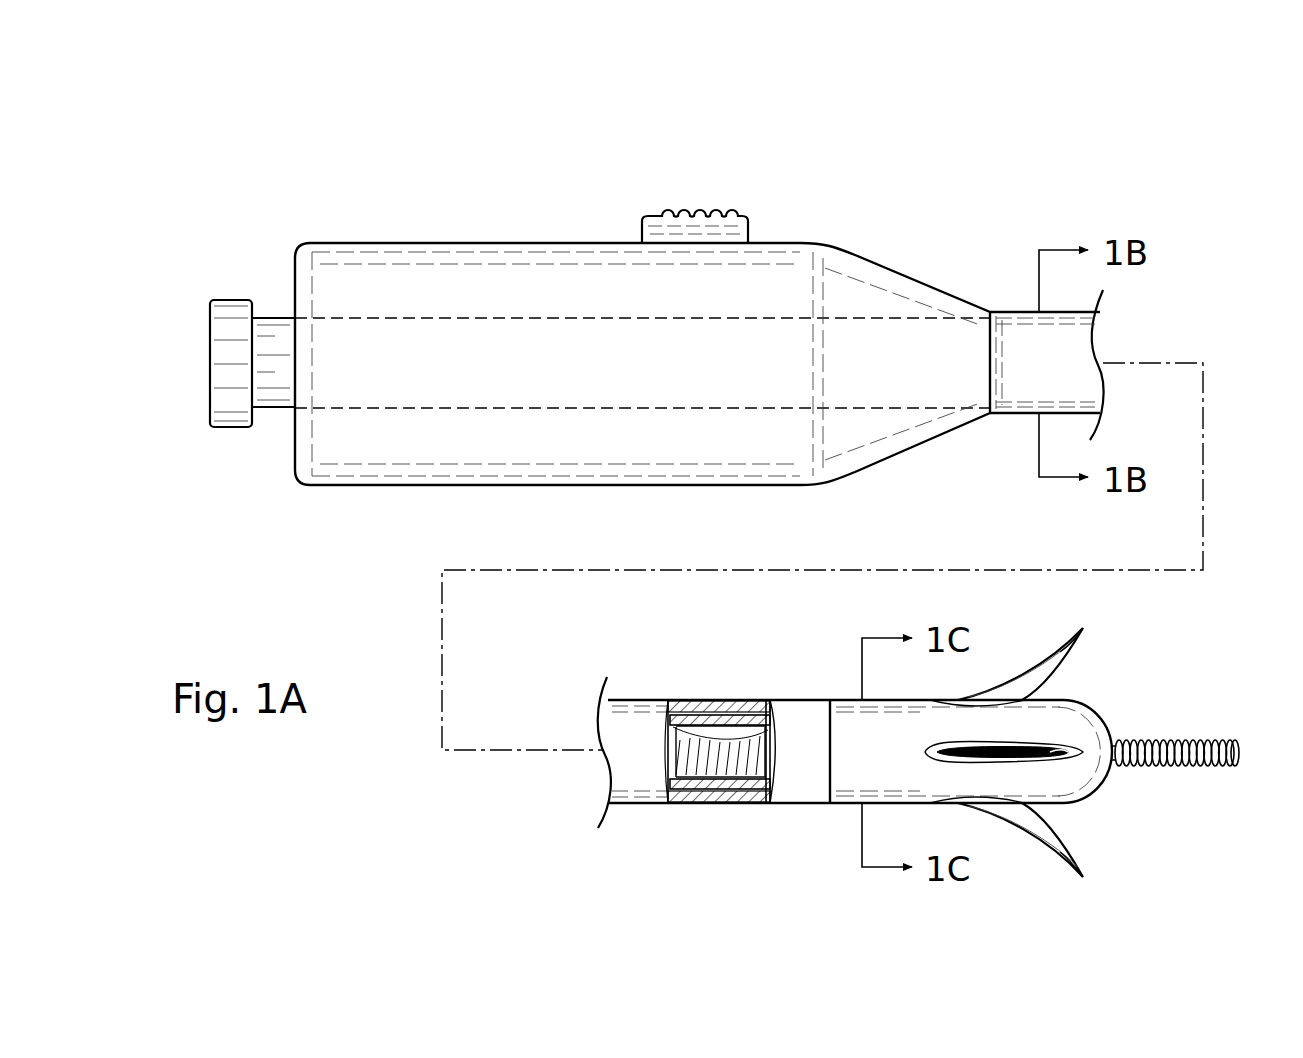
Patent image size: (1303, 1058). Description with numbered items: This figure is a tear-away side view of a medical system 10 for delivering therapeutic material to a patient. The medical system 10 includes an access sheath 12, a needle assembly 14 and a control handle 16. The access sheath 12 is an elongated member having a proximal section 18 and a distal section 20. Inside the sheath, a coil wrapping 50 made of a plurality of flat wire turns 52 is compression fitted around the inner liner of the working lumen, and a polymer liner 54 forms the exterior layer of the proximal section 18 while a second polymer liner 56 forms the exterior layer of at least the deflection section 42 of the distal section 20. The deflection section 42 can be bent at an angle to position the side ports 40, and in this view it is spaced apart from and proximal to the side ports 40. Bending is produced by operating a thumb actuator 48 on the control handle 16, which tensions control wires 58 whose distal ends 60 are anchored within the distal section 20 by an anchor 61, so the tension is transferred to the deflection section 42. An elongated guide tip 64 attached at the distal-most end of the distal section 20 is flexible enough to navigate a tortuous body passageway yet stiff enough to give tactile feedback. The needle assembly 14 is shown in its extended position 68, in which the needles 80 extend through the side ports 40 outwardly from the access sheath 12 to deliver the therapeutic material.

The medical system 10 is at (820, 172).
The access sheath 12 is at (780, 704).
The needle assembly 14 is at (272, 408).
The control handle 16 is at (408, 280).
The proximal section 18 is at (1015, 312).
The distal section 20 is at (784, 805).
The side ports 40 is at (962, 700).
The deflection section 42 is at (684, 805).
The thumb actuator 48 is at (708, 216).
The coil wrapping 50 is at (714, 730).
The flat wire turns 52 is at (726, 706).
The polymer liner 54 is at (1033, 365).
The polymer liner 56 is at (624, 706).
The control wire 58 is at (683, 706).
The distal ends 60 is at (758, 790).
The anchor 61 is at (762, 714).
The elongated guide tip 64 is at (1190, 740).
The extended position 68 is at (1056, 655).
The needles 80 is at (1062, 860).